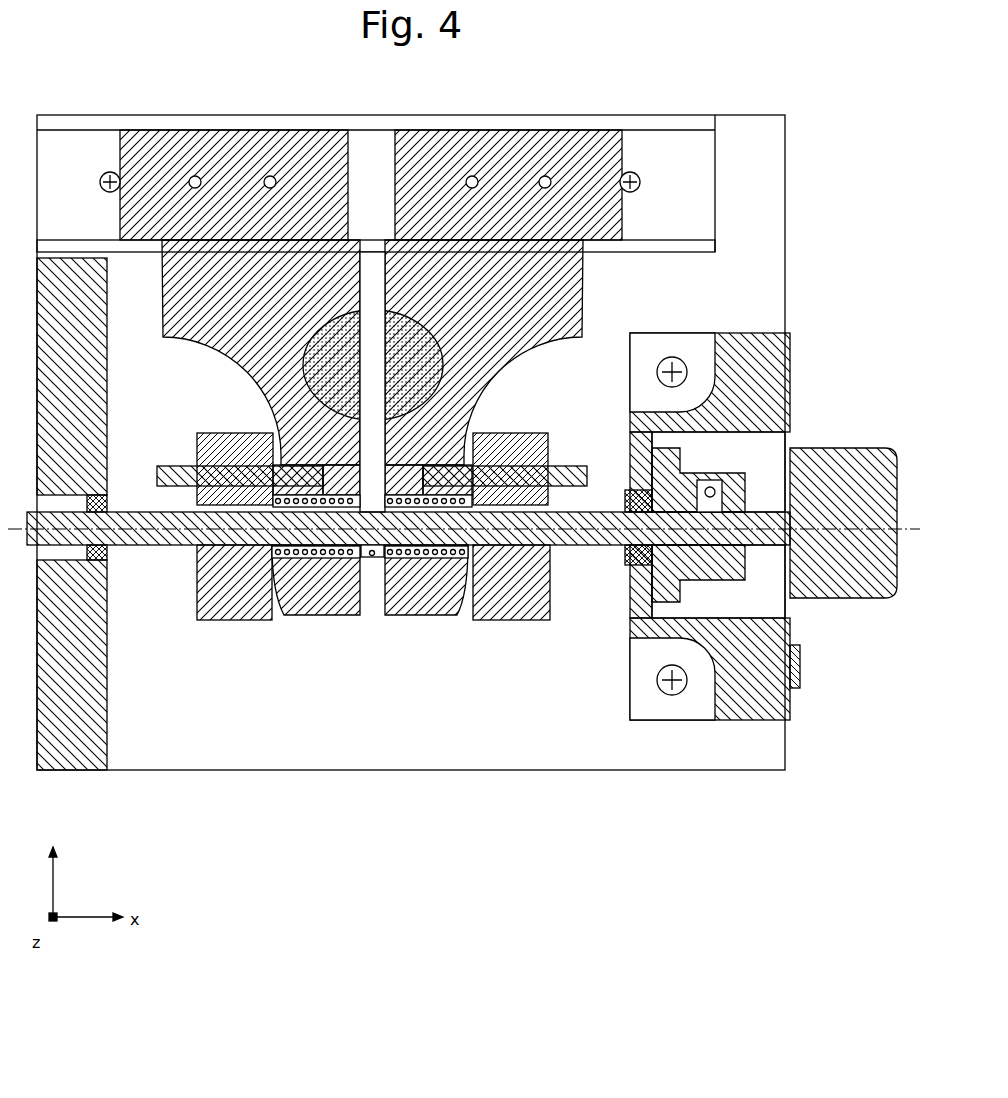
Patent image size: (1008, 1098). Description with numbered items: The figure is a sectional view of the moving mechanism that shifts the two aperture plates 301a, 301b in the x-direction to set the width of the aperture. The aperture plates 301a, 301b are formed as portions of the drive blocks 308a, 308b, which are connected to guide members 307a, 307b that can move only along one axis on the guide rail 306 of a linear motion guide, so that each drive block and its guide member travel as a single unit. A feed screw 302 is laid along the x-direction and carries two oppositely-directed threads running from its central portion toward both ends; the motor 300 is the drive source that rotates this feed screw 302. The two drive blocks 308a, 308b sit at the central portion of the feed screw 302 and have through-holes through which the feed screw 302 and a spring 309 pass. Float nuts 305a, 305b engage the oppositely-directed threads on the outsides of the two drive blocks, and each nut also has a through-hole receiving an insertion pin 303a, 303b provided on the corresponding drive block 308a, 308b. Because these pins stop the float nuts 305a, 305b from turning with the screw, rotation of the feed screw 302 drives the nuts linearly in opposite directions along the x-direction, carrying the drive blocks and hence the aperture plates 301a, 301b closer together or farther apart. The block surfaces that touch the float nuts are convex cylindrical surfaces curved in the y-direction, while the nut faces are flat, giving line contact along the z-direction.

The motor 300 is at (850, 600).
The aperture plate 301a is at (256, 378).
The aperture plate 301b is at (490, 372).
The feed screw 302 is at (157, 547).
The insertion pin 303a is at (173, 465).
The insertion pin 303b is at (570, 462).
The float nut 305a is at (247, 623).
The float nut 305b is at (510, 623).
The guide rail 306 is at (78, 150).
The guide member 307a is at (250, 150).
The guide member 307b is at (523, 143).
The drive block 308a is at (283, 563).
The drive block 308b is at (453, 617).
The spring 309 is at (372, 558).